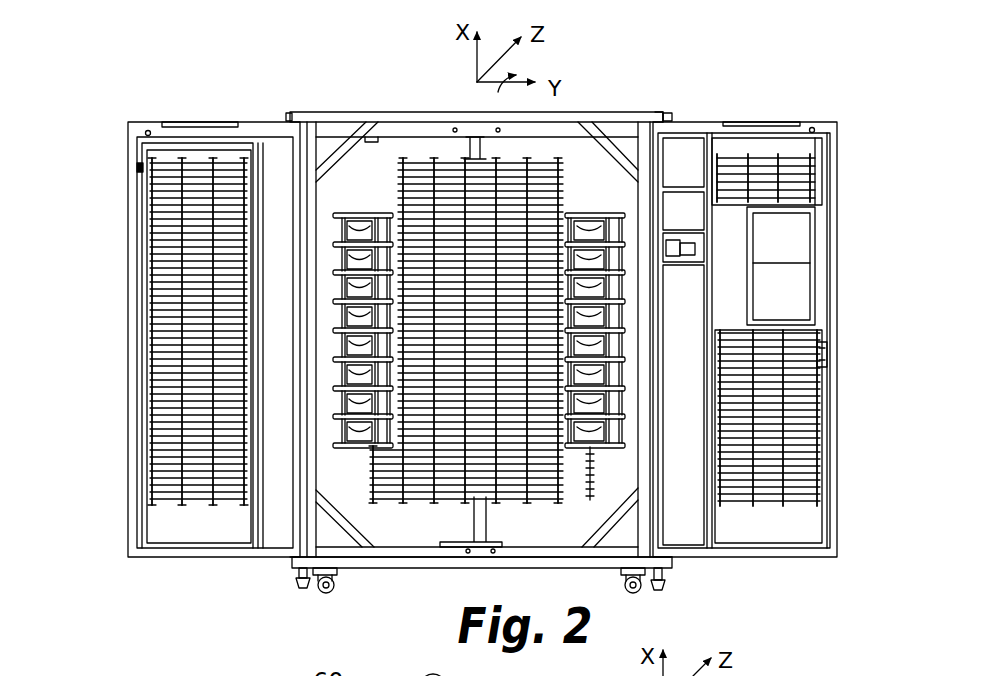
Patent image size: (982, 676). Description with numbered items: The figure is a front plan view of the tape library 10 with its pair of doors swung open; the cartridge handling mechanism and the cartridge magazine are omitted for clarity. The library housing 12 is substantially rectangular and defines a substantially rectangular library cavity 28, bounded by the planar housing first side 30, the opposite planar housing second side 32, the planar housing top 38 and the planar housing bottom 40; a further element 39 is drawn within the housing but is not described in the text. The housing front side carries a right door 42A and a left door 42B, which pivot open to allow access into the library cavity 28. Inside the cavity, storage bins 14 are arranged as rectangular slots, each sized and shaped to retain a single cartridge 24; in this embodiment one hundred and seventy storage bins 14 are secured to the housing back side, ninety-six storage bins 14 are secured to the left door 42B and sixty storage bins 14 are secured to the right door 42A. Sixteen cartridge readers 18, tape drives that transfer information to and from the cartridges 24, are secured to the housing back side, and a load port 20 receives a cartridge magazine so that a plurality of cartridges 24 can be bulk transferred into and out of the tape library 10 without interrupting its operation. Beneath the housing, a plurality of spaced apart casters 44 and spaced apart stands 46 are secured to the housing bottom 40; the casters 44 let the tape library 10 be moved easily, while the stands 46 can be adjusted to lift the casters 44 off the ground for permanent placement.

The tape library 10 is at (569, 102).
The library housing 12 is at (609, 114).
The storage bins 14 is at (140, 170).
The cartridge readers 18 is at (364, 226).
The load port 20 is at (782, 244).
The cartridges 24 is at (165, 167).
The library cavity 28 is at (364, 182).
The housing first side 30 is at (288, 115).
The housing second side 32 is at (674, 117).
The housing top 38 is at (668, 116).
The support clip 39 is at (383, 158).
The housing bottom 40 is at (395, 564).
The right door 42A is at (846, 527).
The left door 42B is at (130, 527).
The casters 44 is at (327, 593).
The stands 46 is at (304, 588).